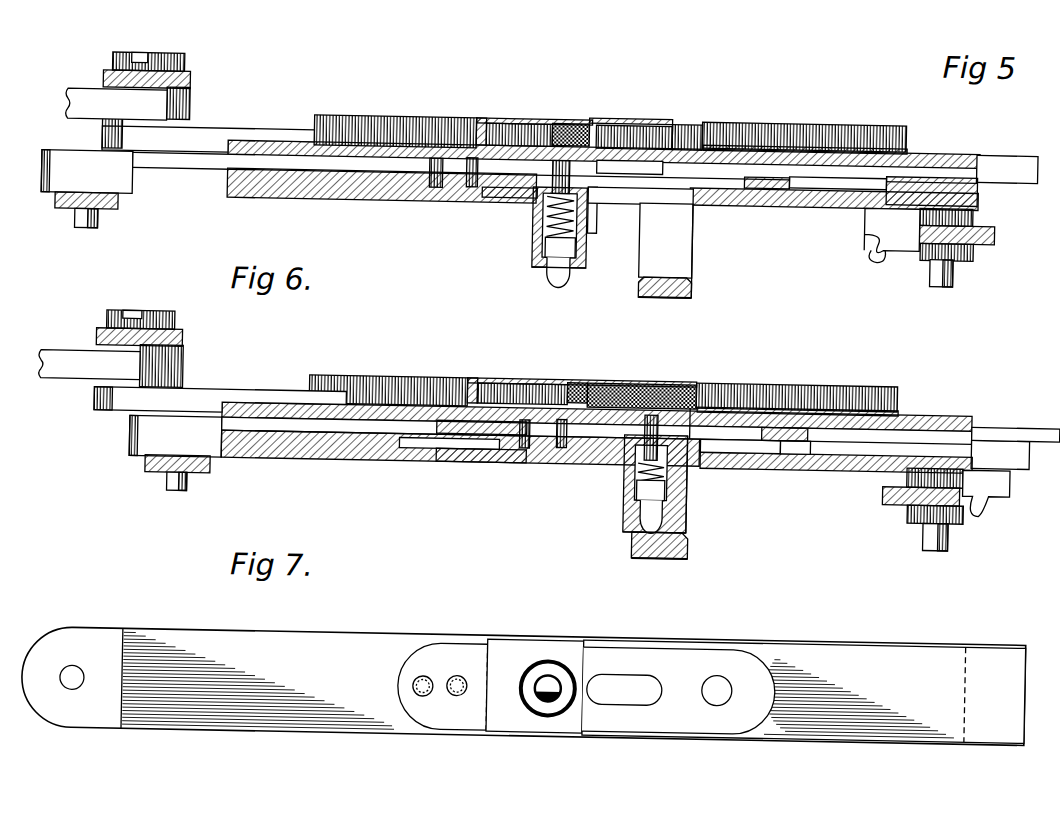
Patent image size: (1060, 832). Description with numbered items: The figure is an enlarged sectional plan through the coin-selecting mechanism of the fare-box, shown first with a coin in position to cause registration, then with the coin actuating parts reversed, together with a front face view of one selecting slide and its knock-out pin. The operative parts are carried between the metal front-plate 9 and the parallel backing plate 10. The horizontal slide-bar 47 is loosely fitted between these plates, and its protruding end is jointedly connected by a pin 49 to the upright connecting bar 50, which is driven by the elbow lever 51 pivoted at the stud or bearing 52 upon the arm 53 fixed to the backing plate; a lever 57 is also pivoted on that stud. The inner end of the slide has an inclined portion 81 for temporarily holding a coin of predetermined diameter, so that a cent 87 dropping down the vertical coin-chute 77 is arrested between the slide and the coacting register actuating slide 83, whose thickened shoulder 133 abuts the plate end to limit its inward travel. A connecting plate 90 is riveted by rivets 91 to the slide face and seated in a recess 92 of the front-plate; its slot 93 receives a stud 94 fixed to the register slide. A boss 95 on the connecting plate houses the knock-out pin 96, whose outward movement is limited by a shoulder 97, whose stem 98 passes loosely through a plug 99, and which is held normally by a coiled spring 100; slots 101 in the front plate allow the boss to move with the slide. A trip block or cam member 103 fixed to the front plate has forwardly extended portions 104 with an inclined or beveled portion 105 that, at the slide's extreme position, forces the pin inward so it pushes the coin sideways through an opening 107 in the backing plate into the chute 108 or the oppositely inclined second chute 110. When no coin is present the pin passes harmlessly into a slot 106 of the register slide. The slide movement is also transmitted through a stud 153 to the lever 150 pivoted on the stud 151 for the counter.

In FIG. 5, the front-plate 9 is at (351, 189).
In FIG. 6, the front-plate 9 is at (330, 457).
In FIG. 5, the backing plate 10 is at (285, 145).
In FIG. 6, the backing plate 10 is at (325, 410).
In FIG. 5, the slide-bar 47 is at (201, 171).
In FIG. 6, the slide-bar 47 is at (270, 430).
In FIG. 7, the slide-bar 47 is at (263, 726).
In FIG. 5, the pins 49 is at (96, 232).
In FIG. 6, the pins 49 is at (170, 491).
In FIG. 7, the pins 49 is at (77, 699).
In FIG. 5, the connecting bar 50 is at (116, 211).
In FIG. 6, the connecting bar 50 is at (145, 470).
In FIG. 5, the elbow lever 51 is at (76, 101).
In FIG. 6, the elbow lever 51 is at (50, 364).
In FIG. 5, the stud or bearing 52 is at (125, 60).
In FIG. 6, the stud or bearing 52 is at (120, 318).
In FIG. 5, the arm 53 is at (204, 140).
In FIG. 6, the arm 53 is at (205, 399).
In FIG. 5, the lever 57 is at (179, 84).
In FIG. 6, the lever 57 is at (183, 346).
In FIG. 5, the vertical coin-chute 77 is at (549, 159).
In FIG. 6, the vertical coin-chute 77 is at (624, 440).
In FIG. 5, the inclined portion 81 is at (507, 124).
In FIG. 6, the inclined portion 81 is at (580, 450).
In FIG. 7, the inclined portion 81 is at (495, 734).
In FIG. 5, the slide 83 is at (764, 140).
In FIG. 6, the slide 83 is at (914, 418).
In FIG. 7, the slide 83 is at (885, 641).
In FIG. 5, the cent 87 is at (531, 235).
In FIG. 6, the cent 87 is at (643, 398).
In FIG. 5, the connecting plate 90 is at (484, 198).
In FIG. 6, the connecting plate 90 is at (481, 453).
In FIG. 7, the connecting plate 90 is at (513, 658).
In FIG. 5, the rivets 91 is at (448, 189).
In FIG. 6, the rivets 91 is at (532, 450).
In FIG. 7, the rivets 91 is at (463, 689).
In FIG. 5, the recess 92 is at (411, 199).
In FIG. 6, the recess 92 is at (411, 459).
In FIG. 5, the slot 93 is at (604, 202).
In FIG. 6, the slot 93 is at (791, 449).
In FIG. 7, the slot 93 is at (680, 703).
In FIG. 5, the stud 94 is at (726, 185).
In FIG. 6, the stud 94 is at (816, 436).
In FIG. 7, the stud 94 is at (726, 671).
In FIG. 5, the boss 95 is at (544, 271).
In FIG. 6, the boss 95 is at (628, 525).
In FIG. 7, the boss 95 is at (560, 718).
In FIG. 5, the knock-out pin 96 is at (552, 266).
In FIG. 6, the knock-out pin 96 is at (666, 523).
In FIG. 7, the knock-out pin 96 is at (548, 697).
In FIG. 5, the shoulder 97 is at (541, 251).
In FIG. 6, the shoulder 97 is at (670, 488).
In FIG. 5, the stem 98 is at (564, 123).
In FIG. 6, the stem 98 is at (615, 382).
In FIG. 5, the plug 99 is at (592, 215).
In FIG. 6, the plug 99 is at (679, 393).
In FIG. 5, the coiled spring 100 is at (541, 229).
In FIG. 6, the coiled spring 100 is at (670, 474).
In FIG. 5, the slots 101 is at (658, 198).
In FIG. 6, the slots 101 is at (590, 450).
In FIG. 5, the trip block or cam member 103 is at (689, 256).
In FIG. 6, the trip block or cam member 103 is at (687, 508).
In FIG. 5, the forwardly extended portions 104 is at (662, 290).
In FIG. 6, the forwardly extended portions 104 is at (680, 557).
In FIG. 5, the inclined or beveled portion 105 is at (641, 279).
In FIG. 6, the inclined or beveled portion 105 is at (632, 546).
In FIG. 5, the slot 106 is at (623, 165).
In FIG. 6, the slot 106 is at (727, 405).
In FIG. 7, the slot 106 is at (633, 697).
In FIG. 5, the openings 107 is at (662, 123).
In FIG. 6, the openings 107 is at (595, 379).
In FIG. 5, the chute 108 is at (481, 120).
In FIG. 6, the chute 108 is at (480, 379).
In FIG. 5, the second chute 110 is at (594, 118).
In FIG. 6, the second chute 110 is at (648, 383).
In FIG. 5, the shoulders 133 is at (984, 146).
In FIG. 6, the shoulders 133 is at (1039, 415).
In FIG. 7, the shoulders 133 is at (970, 660).
In FIG. 5, the lever 150 is at (991, 226).
In FIG. 6, the lever 150 is at (884, 490).
In FIG. 5, the stud 151 is at (950, 268).
In FIG. 6, the stud 151 is at (948, 538).
In FIG. 5, the stud 153 is at (876, 240).
In FIG. 6, the stud 153 is at (992, 498).